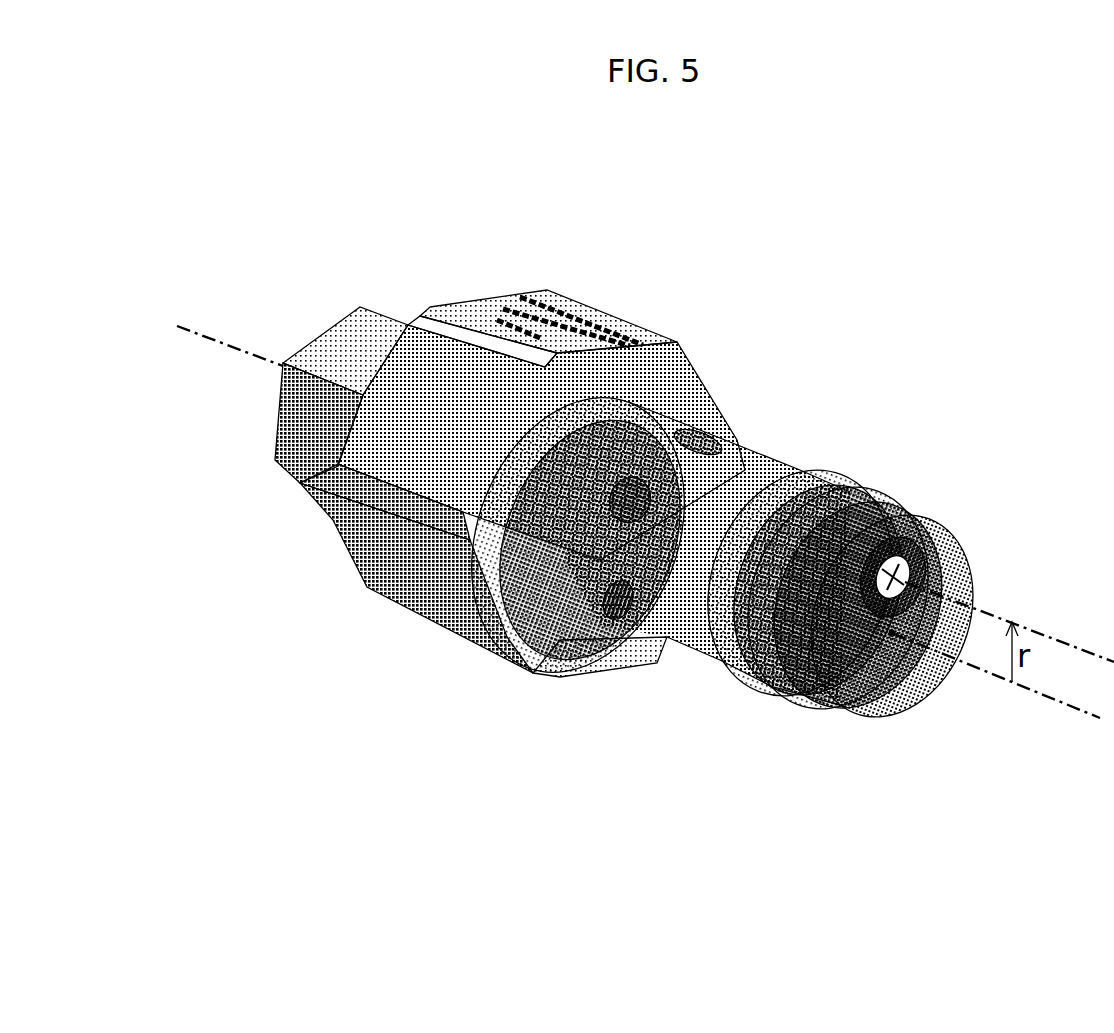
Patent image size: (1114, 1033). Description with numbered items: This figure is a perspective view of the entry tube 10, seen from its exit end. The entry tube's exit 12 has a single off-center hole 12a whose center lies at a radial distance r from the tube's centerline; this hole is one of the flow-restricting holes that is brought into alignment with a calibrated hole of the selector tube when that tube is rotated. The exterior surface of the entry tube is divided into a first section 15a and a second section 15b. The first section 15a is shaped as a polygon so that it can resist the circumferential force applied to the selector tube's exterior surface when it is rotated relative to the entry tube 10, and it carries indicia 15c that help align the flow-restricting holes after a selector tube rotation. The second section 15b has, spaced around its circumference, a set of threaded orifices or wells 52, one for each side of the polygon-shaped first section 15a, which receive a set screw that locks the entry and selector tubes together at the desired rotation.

The entry tube 10 is at (683, 501).
The entry tube's exit 12 is at (953, 565).
The off-center hole 12a is at (883, 577).
The first section 15a is at (410, 577).
The second section 15b is at (680, 630).
The indicia 15c is at (572, 310).
The threaded orifices or wells 52 is at (707, 443).